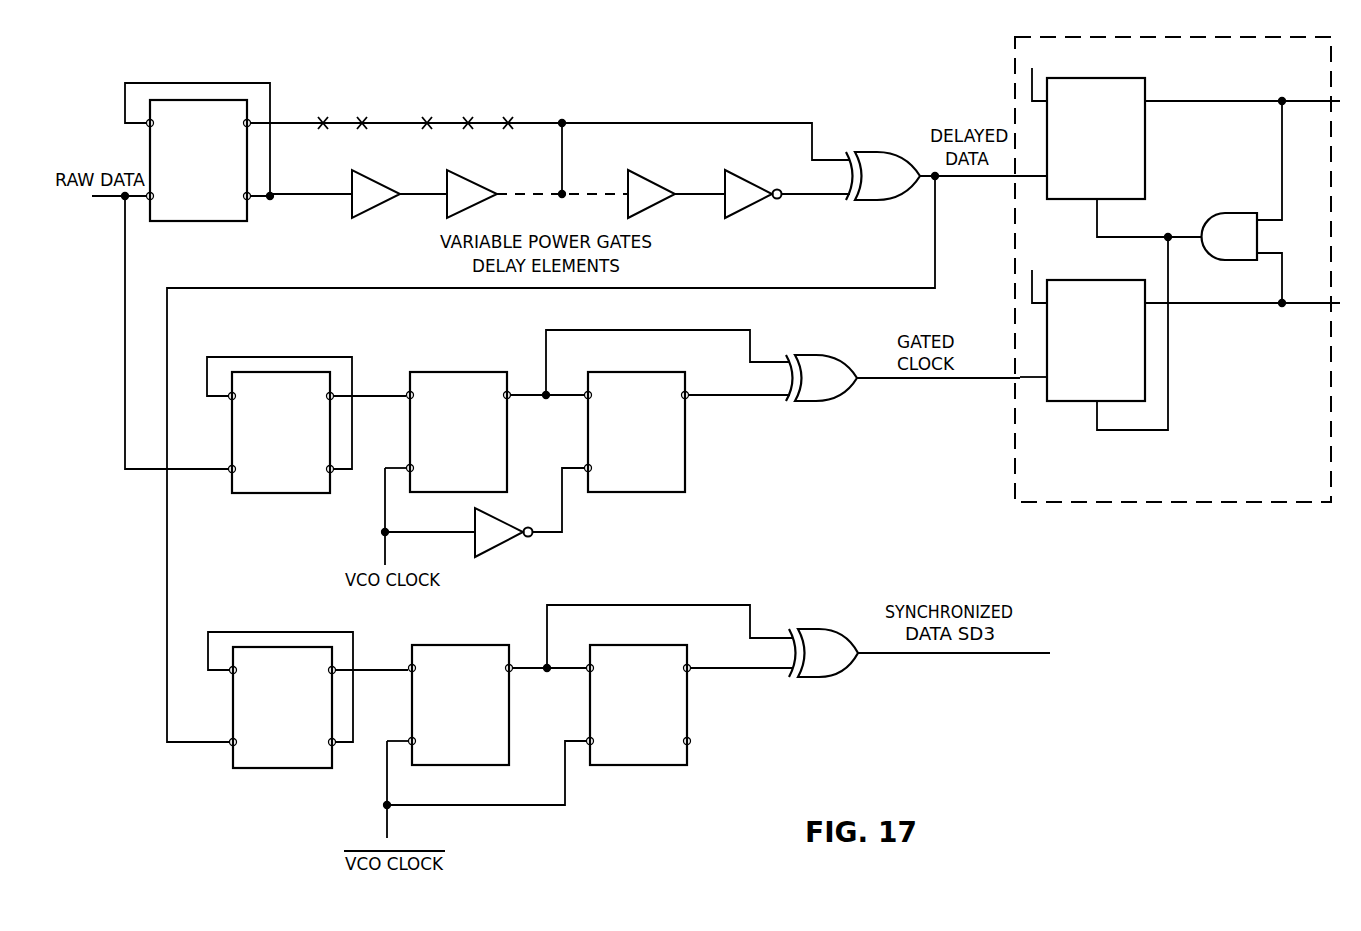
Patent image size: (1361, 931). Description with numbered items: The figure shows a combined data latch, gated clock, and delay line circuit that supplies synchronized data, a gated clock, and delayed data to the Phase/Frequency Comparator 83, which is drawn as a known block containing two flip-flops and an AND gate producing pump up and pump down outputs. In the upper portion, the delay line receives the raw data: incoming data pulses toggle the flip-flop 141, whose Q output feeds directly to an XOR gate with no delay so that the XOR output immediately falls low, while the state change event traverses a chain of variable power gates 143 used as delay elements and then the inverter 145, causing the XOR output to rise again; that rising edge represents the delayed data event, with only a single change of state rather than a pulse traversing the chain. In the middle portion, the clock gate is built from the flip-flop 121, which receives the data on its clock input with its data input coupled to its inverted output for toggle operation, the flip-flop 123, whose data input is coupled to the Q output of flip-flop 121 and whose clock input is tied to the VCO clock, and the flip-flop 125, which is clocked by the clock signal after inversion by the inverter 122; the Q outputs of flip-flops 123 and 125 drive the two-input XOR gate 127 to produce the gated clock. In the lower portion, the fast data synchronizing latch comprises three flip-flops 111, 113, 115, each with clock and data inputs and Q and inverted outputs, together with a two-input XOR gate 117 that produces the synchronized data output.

The flip-flop 141 is at (150, 152).
The variable power gates 143 is at (371, 182).
The inverter 145 is at (871, 150).
The Phase/Frequency Comparator 83 is at (1015, 90).
The flip-flop 121 is at (233, 436).
The inverter 122 is at (490, 540).
The flip-flop 123 is at (459, 367).
The flip-flop 125 is at (686, 432).
The two-input XOR gate 127 is at (813, 355).
The flip-flop 111 is at (233, 708).
The flip-flop 113 is at (461, 640).
The flip-flop 115 is at (686, 702).
The two-input XOR gate 117 is at (814, 630).